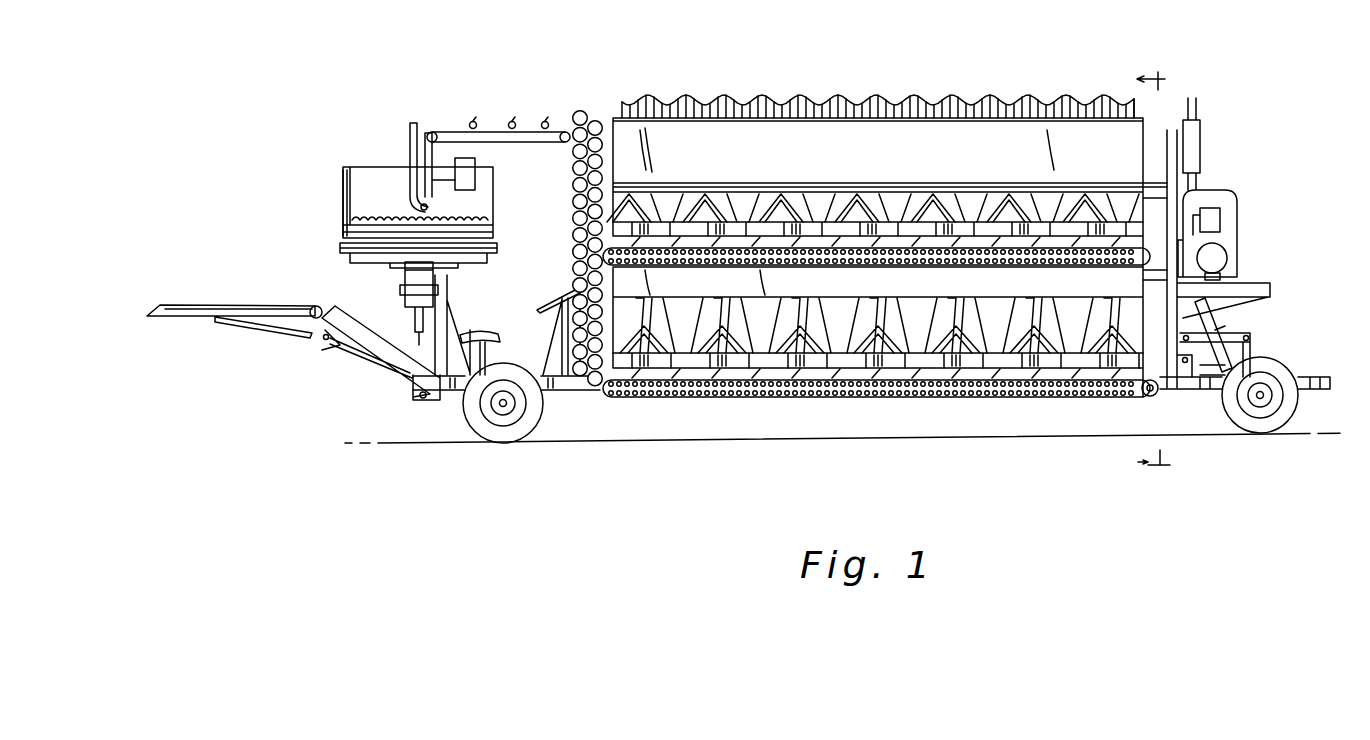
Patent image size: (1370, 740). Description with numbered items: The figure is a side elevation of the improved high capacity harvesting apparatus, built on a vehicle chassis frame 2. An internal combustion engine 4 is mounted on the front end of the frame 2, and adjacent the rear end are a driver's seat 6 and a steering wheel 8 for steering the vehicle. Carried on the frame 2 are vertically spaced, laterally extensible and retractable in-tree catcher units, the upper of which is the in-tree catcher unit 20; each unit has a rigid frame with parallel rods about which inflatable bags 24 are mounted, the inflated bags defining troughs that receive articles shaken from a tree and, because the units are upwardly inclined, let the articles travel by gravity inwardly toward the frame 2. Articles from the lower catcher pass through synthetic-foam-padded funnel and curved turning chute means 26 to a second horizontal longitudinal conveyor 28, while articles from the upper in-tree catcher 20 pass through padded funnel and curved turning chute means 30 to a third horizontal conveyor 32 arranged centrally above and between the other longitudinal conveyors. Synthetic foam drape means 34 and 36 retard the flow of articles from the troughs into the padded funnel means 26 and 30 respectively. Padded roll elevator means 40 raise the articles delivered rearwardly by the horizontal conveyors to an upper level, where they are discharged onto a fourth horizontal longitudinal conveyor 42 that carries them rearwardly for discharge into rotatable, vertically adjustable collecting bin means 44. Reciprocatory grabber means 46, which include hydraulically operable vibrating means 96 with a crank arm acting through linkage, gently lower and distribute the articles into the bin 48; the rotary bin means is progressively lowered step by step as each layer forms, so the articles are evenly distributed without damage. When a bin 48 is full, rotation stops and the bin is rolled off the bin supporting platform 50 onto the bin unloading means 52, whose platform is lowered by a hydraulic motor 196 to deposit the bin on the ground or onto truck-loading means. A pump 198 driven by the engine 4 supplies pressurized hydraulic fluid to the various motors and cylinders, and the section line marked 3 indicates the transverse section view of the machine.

The vehicle chassis frame 2 is at (1166, 396).
The section line 3- 3 is at (1164, 271).
The internal combustion engine 4 is at (1227, 226).
The driver's seat 6 is at (474, 333).
The steering wheel 8 is at (540, 300).
The upper in-tree catcher unit 20 is at (896, 71).
The inflatable bags 24 is at (708, 100).
The padded funnel and curved turning chute means 26 is at (986, 305).
The second horizontal longitudinal conveyor 28 is at (1042, 396).
The padded funnel and curved turning chute means 30 is at (1076, 192).
The third horizontal conveyor 32 is at (1063, 254).
The synthetic foam drape means 34 is at (847, 290).
The synthetic foam drape means 36 is at (900, 167).
The padded roll elevator means 40 is at (595, 107).
The fourth horizontal longitudinal conveyor 42 is at (548, 144).
The rotatable vertically-adjustable collecting bin means 44 is at (335, 204).
The reciprocatory grabber means 46 is at (411, 156).
The collecting bin 48 is at (343, 178).
The bin supporting platform 50 is at (338, 247).
The bin unloading means 52 is at (192, 318).
The hydraulically operable vibrating means 96 is at (466, 158).
The hydraulic motor 196 is at (393, 309).
The pump 198 is at (1222, 260).